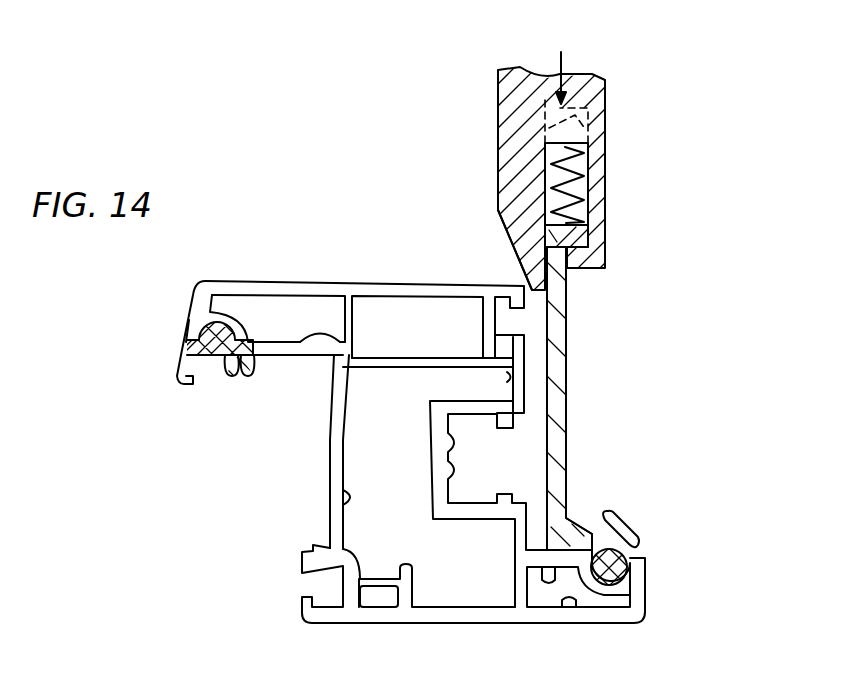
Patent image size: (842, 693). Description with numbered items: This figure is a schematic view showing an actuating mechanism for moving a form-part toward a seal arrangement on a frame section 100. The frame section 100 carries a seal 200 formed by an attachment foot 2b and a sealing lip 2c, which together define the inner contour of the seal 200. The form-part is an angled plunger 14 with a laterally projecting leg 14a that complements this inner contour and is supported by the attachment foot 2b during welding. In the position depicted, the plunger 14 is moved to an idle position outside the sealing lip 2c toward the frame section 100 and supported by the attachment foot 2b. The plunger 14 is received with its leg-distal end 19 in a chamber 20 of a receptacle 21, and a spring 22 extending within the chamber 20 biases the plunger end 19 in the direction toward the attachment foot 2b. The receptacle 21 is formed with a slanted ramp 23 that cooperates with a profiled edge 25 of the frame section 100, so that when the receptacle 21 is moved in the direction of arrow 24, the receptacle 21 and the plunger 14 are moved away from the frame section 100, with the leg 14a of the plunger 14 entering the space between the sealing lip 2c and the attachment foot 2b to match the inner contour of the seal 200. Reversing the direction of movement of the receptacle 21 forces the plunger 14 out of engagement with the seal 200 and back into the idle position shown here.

The frame section 100 is at (339, 262).
The profiled edge 25 is at (520, 287).
The receptacle 21 is at (605, 85).
The chamber 20 is at (585, 143).
The spring 22 is at (585, 191).
The leg-distal end 19 is at (580, 233).
The arrow 24 is at (561, 55).
The slanted ramp 23 is at (502, 237).
The plunger 14 is at (558, 357).
The laterally projecting leg 14a is at (577, 523).
The sealing lip 2c is at (606, 513).
The seal 200 is at (641, 519).
The attachment foot 2b is at (608, 580).